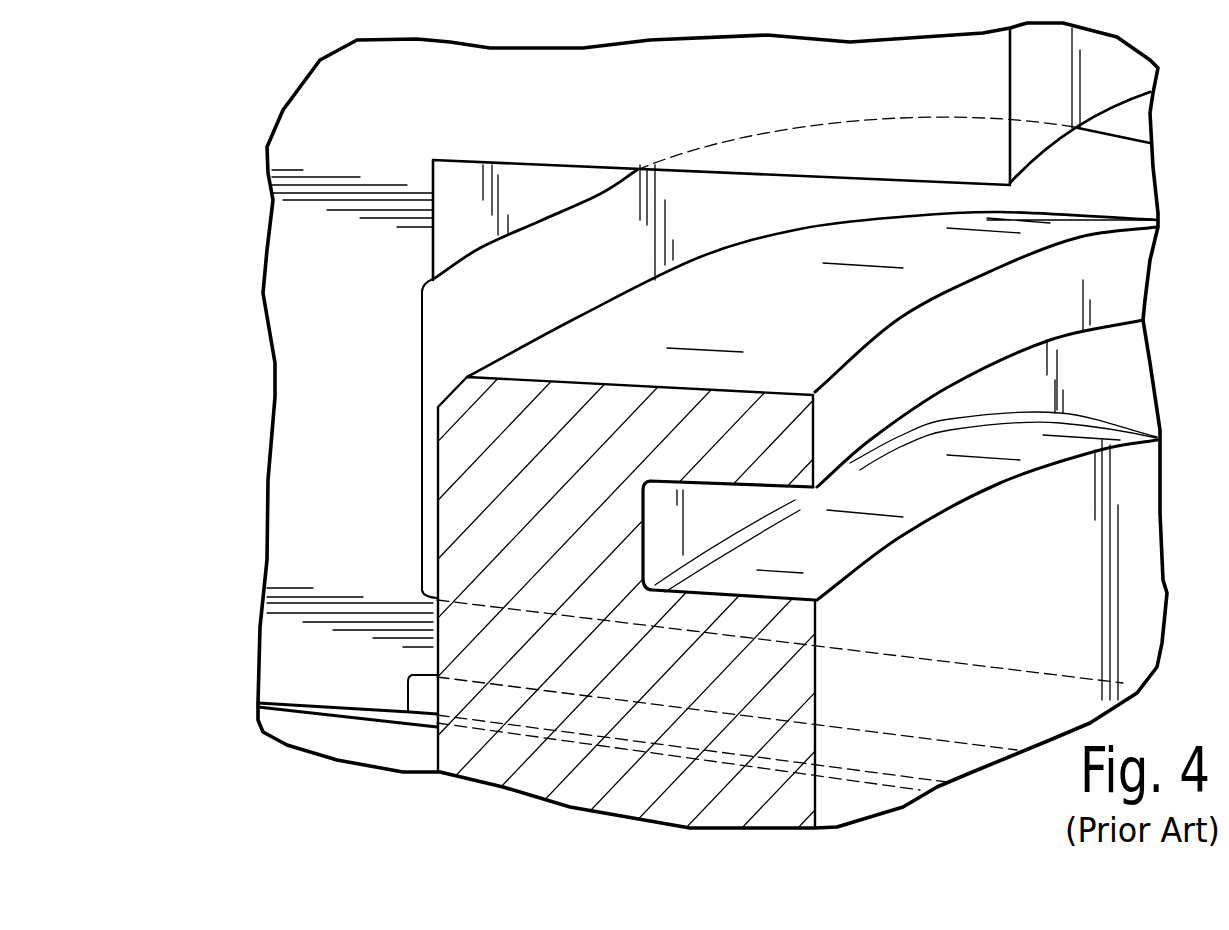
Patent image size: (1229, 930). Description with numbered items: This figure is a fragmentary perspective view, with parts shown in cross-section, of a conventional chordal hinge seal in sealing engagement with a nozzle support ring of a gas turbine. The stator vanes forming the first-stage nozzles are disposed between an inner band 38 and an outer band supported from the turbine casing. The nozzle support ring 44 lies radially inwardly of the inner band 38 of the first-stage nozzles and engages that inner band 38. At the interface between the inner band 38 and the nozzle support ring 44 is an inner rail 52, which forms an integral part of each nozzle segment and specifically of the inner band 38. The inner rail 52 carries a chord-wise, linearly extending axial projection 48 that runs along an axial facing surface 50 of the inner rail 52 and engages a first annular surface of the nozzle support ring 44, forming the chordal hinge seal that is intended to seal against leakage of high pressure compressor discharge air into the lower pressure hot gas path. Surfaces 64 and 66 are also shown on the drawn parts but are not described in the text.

The inner band 38 is at (350, 78).
The nozzle support ring 44 is at (537, 780).
The axial projection 48 is at (427, 658).
The axial facing surface 50 is at (437, 307).
The inner rail 52 is at (327, 420).
The curved bearing surface 64 is at (723, 337).
The chamfered edge 66 is at (1060, 143).